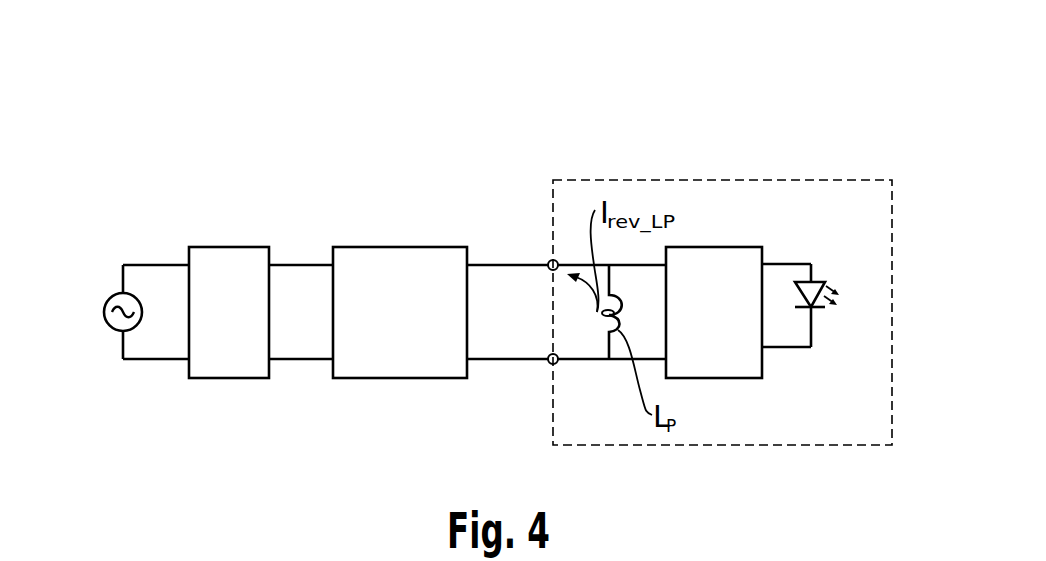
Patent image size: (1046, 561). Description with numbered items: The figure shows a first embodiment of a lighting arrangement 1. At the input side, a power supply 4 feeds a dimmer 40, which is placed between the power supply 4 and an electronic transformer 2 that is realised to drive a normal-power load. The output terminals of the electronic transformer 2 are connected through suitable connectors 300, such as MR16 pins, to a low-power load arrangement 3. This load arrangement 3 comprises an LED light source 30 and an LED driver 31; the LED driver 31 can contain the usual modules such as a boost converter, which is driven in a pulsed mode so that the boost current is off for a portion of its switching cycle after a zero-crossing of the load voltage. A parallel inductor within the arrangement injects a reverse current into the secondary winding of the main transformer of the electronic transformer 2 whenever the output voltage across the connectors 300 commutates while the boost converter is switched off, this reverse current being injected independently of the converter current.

The lighting arrangement 1 is at (784, 94).
The electronic transformer 2 is at (400, 247).
The low-power load arrangement 3 is at (825, 180).
The power supply 4 is at (106, 300).
The LED light source 30 is at (828, 280).
The LED driver 31 is at (722, 247).
The dimmer 40 is at (227, 247).
The connectors 300 is at (549, 262).